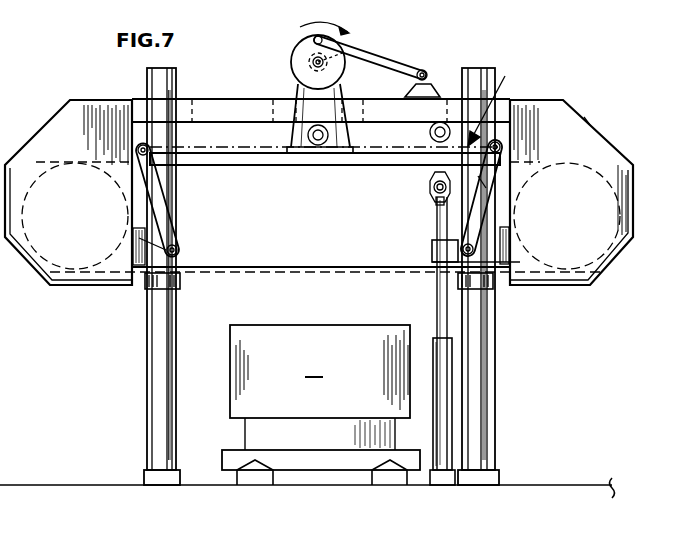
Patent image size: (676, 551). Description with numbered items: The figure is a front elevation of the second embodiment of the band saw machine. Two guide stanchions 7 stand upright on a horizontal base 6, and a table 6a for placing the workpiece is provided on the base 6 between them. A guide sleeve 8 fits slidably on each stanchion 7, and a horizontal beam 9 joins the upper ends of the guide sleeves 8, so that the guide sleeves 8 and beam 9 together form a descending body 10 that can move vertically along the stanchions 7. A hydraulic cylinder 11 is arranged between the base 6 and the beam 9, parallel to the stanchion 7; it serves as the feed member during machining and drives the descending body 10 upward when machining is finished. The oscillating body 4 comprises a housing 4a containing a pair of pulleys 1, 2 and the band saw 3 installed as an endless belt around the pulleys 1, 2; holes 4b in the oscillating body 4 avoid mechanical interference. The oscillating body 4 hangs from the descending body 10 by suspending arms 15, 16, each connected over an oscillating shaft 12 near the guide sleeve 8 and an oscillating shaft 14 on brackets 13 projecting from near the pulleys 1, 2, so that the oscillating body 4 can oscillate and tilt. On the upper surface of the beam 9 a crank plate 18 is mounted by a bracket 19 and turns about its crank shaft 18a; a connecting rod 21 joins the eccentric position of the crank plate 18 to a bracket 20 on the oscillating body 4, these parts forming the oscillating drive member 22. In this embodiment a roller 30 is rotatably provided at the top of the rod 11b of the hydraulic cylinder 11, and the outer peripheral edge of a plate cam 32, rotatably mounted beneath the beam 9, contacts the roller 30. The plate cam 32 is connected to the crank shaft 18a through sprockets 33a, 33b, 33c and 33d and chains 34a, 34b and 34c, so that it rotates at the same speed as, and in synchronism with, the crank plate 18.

The pulley 1 is at (62, 270).
The pulley 2 is at (598, 256).
The band saw 3 is at (318, 272).
The oscillating body 4 is at (630, 156).
The housing 4a is at (588, 123).
The holes 4b is at (194, 102).
The horizontal base 6 is at (547, 485).
The table 6a is at (338, 463).
The guide stanchion 7 is at (158, 399).
The guide sleeve 8 is at (158, 308).
The horizontal beam 9 is at (228, 166).
The descending body 10 is at (499, 100).
The hydraulic cylinder 11 is at (438, 426).
The rod 11b is at (446, 330).
The oscillating shaft 12 is at (143, 143).
The bracket 13 is at (142, 262).
The oscillating shaft 14 is at (178, 254).
The suspending arm 15 is at (166, 207).
The suspending arm 16 is at (500, 178).
The crank plate 18 is at (294, 66).
The crank shaft 18a is at (310, 64).
The bracket 19 is at (290, 142).
The bracket 20 is at (430, 82).
The connecting rod 21 is at (400, 68).
The oscillating drive member 22 is at (387, 41).
The roller 30 is at (438, 214).
The plate cam 32 is at (470, 182).
The sprocket 33a is at (334, 66).
The sprocket 33b is at (322, 150).
The sprocket 33c is at (431, 188).
The sprocket 33d is at (467, 244).
The chain 34a is at (306, 155).
The chain 34b is at (368, 155).
The chain 34c is at (412, 182).